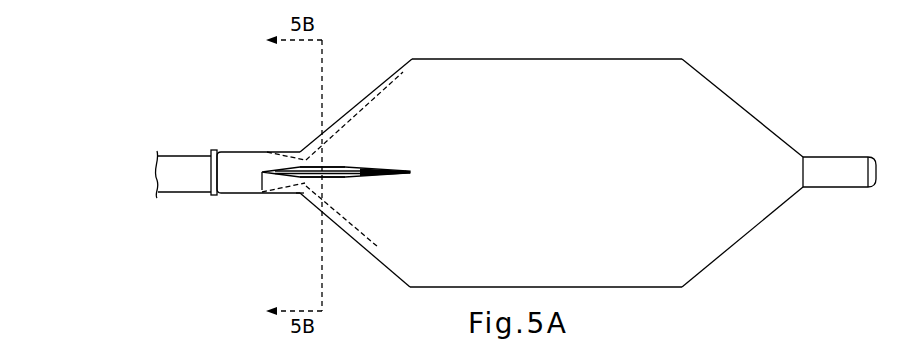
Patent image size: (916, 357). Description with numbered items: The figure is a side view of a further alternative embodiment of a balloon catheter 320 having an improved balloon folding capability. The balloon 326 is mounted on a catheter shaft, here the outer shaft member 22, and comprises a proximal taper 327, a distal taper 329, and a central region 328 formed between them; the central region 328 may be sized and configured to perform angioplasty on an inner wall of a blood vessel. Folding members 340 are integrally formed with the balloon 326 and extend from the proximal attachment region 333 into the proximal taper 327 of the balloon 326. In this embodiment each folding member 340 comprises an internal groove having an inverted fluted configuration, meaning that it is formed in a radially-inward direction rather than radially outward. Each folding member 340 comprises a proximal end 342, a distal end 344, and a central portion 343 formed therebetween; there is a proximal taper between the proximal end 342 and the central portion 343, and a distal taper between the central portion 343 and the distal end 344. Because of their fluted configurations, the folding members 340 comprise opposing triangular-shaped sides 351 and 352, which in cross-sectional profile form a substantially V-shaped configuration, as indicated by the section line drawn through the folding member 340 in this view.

The balloon catheter 320 is at (134, 117).
The outer shaft member 22 is at (182, 165).
The proximal attachment region 333 is at (232, 154).
The proximal taper 327 is at (350, 105).
The central region 328 is at (613, 59).
The distal taper 329 is at (768, 128).
The balloon 326 is at (538, 98).
The folding member 340 is at (300, 150).
The triangular-shaped side 351 is at (333, 170).
The triangular-shaped side 352 is at (330, 178).
The distal end 344 is at (412, 176).
The central portion 343 is at (300, 195).
The proximal end 342 is at (262, 176).